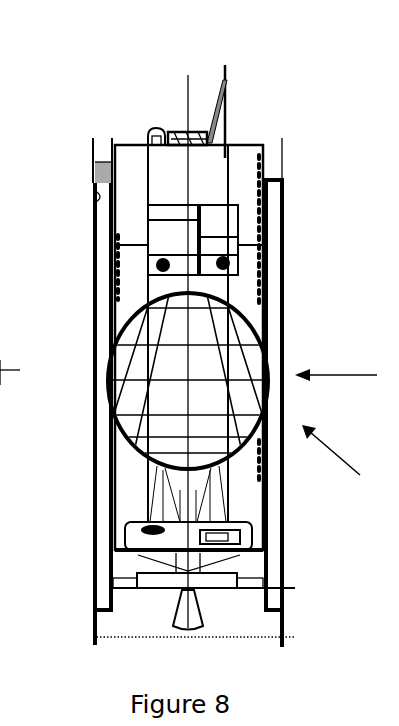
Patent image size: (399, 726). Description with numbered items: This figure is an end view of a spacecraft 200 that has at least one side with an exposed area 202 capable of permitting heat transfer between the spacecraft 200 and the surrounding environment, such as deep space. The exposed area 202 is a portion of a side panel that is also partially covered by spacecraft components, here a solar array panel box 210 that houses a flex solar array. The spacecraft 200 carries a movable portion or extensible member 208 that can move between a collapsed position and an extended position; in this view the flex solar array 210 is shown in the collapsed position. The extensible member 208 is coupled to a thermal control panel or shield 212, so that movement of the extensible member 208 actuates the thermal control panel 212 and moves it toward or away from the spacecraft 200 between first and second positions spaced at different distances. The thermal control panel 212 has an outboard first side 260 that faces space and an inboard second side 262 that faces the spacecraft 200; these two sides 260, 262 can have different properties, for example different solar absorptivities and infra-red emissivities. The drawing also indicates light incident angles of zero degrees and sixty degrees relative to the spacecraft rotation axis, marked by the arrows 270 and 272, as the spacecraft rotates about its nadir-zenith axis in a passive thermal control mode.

The spacecraft 200 is at (293, 55).
The exposed area 202 is at (262, 147).
The extensible member 208 is at (107, 168).
The solar array panel box 210 is at (105, 350).
The thermal control panel 212 is at (283, 192).
The first side 260 is at (92, 275).
The second side 262 is at (92, 187).
The 0 degree direction arrow 270 is at (357, 377).
The 60 degree direction arrow 272 is at (338, 462).